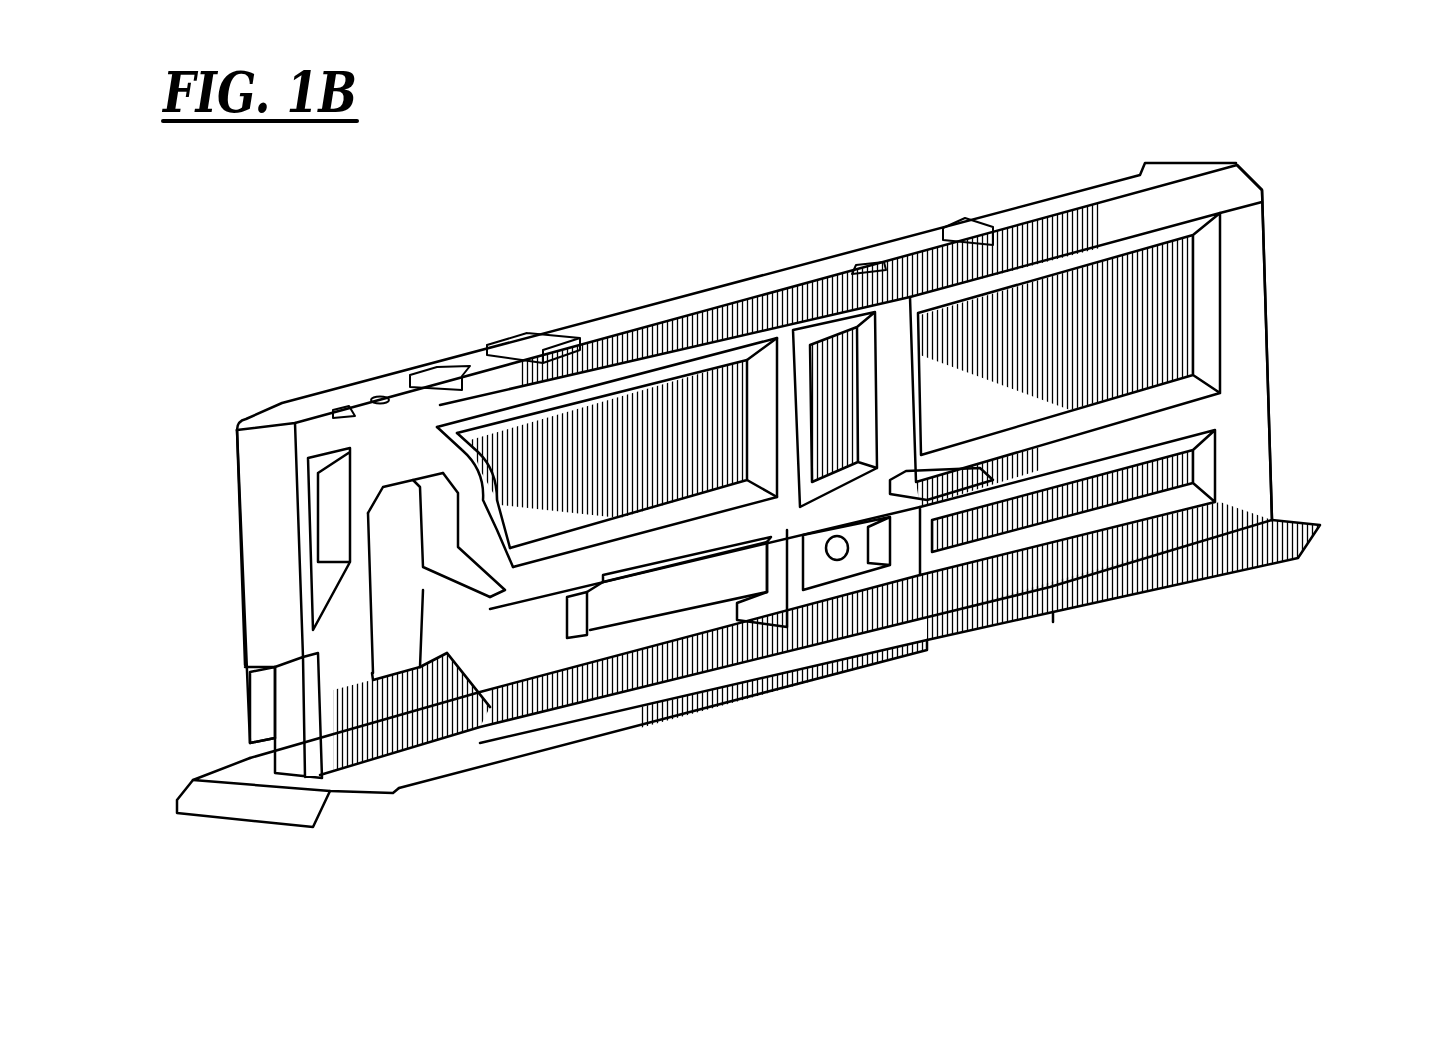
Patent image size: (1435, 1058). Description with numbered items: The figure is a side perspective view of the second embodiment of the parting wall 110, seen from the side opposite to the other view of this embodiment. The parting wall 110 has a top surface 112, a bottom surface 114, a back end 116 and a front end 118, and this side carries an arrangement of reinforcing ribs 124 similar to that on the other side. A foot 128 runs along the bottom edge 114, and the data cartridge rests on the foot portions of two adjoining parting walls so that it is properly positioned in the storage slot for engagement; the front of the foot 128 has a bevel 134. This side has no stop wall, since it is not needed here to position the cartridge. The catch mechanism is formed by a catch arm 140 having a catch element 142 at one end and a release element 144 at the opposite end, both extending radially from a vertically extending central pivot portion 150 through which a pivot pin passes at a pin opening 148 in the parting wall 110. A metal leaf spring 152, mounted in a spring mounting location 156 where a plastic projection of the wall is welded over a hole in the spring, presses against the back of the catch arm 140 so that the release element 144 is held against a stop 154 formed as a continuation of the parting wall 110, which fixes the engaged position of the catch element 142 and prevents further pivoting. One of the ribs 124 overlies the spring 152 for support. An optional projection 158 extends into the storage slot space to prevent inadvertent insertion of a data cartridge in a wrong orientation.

The parting wall 110 is at (910, 197).
The top surface 112 is at (1018, 218).
The bottom surface 114 is at (1217, 567).
The back end 116 is at (1270, 340).
The front end 118 is at (238, 487).
The reinforcing ribs 124 is at (900, 358).
The foot 128 is at (250, 773).
The bevel 134 is at (230, 827).
The catch arm 140 is at (453, 623).
The catch element 142 is at (550, 627).
The release element 144 is at (245, 703).
The pin opening 148 is at (380, 395).
The central pivot portion 150 is at (443, 520).
The spring 152 is at (707, 585).
The stop 154 is at (298, 698).
The spring mounting location 156 is at (785, 592).
The projection 158 is at (965, 483).